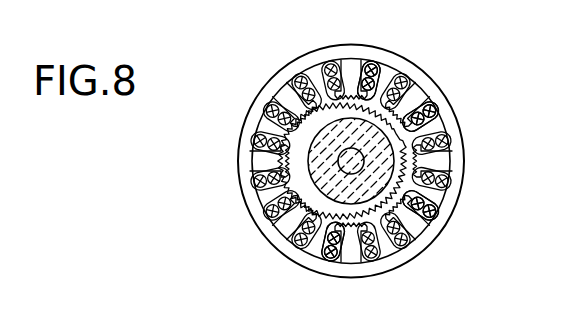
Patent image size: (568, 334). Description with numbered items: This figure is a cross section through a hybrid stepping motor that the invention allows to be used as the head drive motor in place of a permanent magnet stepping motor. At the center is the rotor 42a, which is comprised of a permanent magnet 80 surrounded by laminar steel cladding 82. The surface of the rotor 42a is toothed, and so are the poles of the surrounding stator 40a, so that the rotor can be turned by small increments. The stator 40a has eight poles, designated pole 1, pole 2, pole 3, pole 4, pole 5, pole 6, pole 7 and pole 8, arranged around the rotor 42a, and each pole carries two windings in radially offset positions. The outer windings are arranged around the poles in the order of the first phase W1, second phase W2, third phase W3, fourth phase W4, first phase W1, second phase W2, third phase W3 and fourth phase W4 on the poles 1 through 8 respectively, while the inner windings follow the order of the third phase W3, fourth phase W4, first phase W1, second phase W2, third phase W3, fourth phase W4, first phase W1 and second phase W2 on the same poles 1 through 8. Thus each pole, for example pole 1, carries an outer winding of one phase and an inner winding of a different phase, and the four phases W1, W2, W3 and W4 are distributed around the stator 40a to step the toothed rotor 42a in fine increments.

The stator 40a is at (306, 50).
The rotor 42a is at (252, 196).
The permanent magnet 80 is at (316, 147).
The laminar steel cladding 82 is at (318, 204).
The pole 1 is at (351, 79).
The pole 2 is at (409, 103).
The pole 3 is at (432, 161).
The pole 4 is at (409, 219).
The pole 5 is at (351, 242).
The pole 6 is at (293, 219).
The pole 7 is at (269, 161).
The pole 8 is at (293, 103).
The first phase winding W1 is at (352, 291).
The second phase winding W2 is at (427, 106).
The third phase winding W3 is at (310, 285).
The fourth phase winding W4 is at (447, 255).